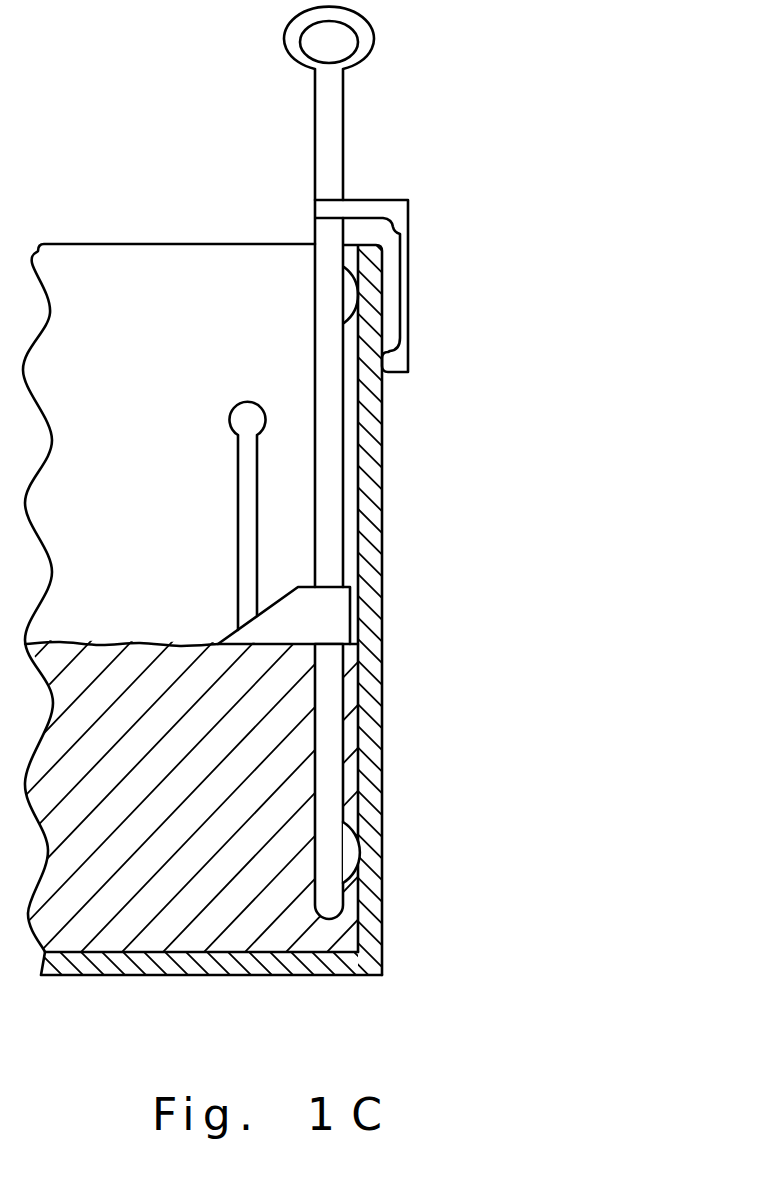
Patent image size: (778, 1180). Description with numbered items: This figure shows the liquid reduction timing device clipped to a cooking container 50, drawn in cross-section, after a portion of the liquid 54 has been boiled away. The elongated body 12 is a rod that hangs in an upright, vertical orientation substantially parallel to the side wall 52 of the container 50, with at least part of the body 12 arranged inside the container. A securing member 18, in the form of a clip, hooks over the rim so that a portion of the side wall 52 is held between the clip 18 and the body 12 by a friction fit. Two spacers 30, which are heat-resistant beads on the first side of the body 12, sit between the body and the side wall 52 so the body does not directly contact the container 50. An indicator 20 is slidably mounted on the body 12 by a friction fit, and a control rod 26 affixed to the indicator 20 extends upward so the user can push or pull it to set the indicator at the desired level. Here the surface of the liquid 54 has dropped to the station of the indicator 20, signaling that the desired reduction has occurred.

The elongated body 12 is at (366, 463).
The securing member 18 is at (405, 286).
The spacer 30 is at (431, 575).
The control rod 26 is at (214, 500).
The side wall 52 is at (389, 610).
The indicator 20 is at (247, 608).
The liquid 54 is at (333, 778).
The cooking container 50 is at (213, 986).